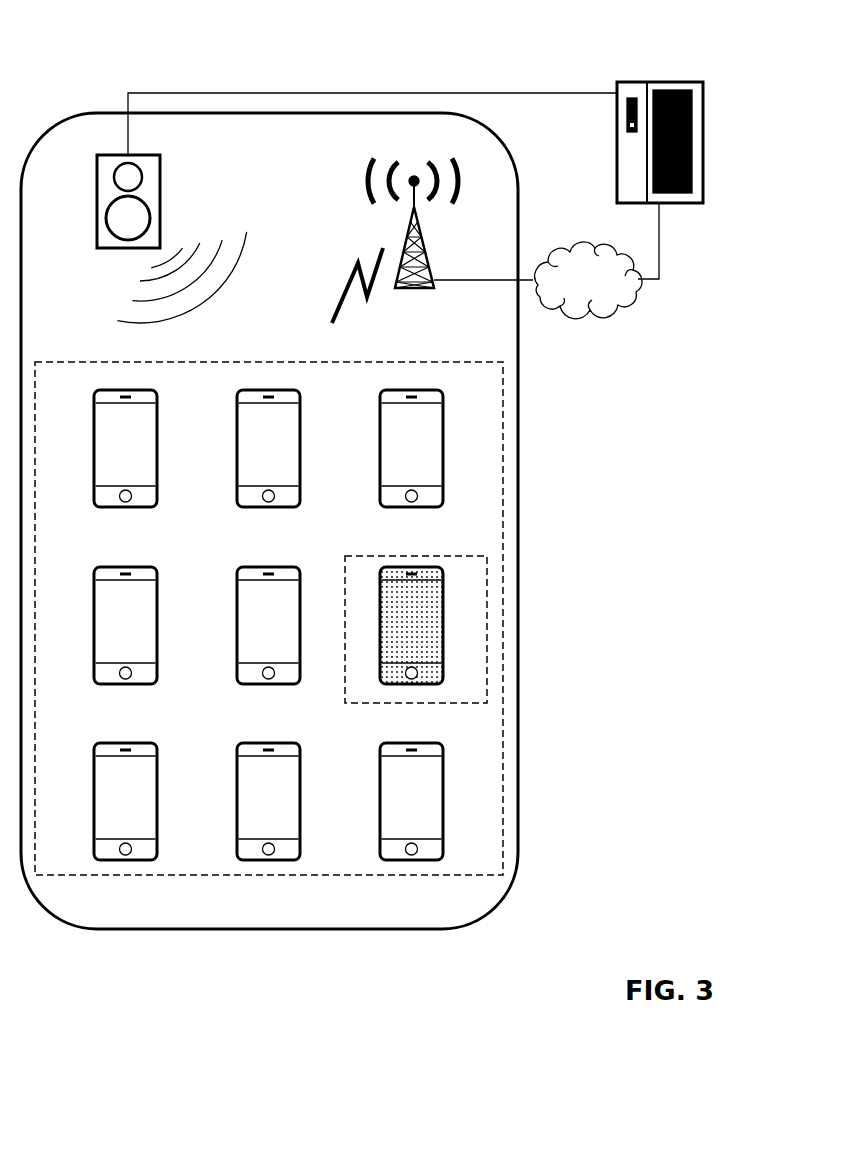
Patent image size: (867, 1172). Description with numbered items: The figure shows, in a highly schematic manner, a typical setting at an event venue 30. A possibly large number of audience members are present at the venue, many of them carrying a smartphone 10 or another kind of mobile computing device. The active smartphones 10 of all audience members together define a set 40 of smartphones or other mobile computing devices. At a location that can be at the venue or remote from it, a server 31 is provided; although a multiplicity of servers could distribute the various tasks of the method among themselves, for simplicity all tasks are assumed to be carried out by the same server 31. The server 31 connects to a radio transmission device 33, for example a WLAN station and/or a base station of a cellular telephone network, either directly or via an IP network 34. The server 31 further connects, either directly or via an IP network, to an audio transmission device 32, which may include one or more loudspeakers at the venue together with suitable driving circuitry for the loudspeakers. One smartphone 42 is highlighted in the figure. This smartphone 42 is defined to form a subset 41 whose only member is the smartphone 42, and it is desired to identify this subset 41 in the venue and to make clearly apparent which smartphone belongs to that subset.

The smartphone 10 is at (100, 425).
The event venue 30 is at (80, 114).
The server 31 is at (657, 82).
The audio transmission device 32 is at (106, 222).
The radio transmission device 33 is at (402, 248).
The IP network 34 is at (582, 293).
The set of smartphones 40 is at (503, 823).
The subset 41 is at (487, 668).
The highlighted smartphone 42 is at (435, 598).